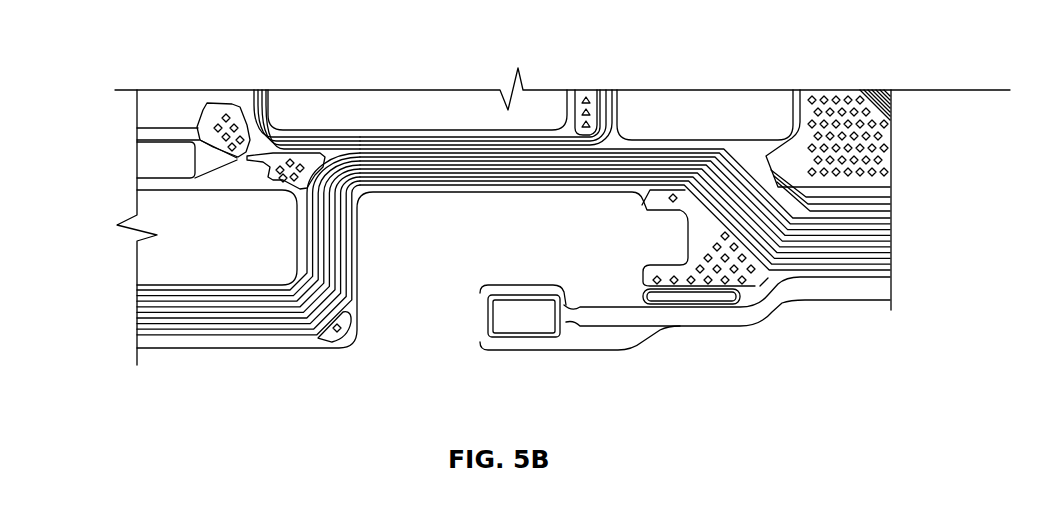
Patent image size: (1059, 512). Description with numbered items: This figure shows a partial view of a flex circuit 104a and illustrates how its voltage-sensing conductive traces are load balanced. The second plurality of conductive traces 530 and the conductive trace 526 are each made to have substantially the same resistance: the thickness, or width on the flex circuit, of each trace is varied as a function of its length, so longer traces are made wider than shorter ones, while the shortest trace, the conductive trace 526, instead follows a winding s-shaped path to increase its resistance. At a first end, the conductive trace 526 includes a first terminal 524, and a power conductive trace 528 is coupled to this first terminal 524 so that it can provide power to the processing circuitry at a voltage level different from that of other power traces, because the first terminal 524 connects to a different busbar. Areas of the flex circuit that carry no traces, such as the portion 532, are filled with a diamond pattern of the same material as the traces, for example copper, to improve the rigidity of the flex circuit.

The flexible circuit substrate 104a is at (172, 44).
The first terminal 524 is at (512, 322).
The conductive trace 526 is at (638, 292).
The power conductive trace 528 is at (667, 328).
The second plurality of conductive traces 530 is at (912, 180).
The portion 532 is at (880, 127).